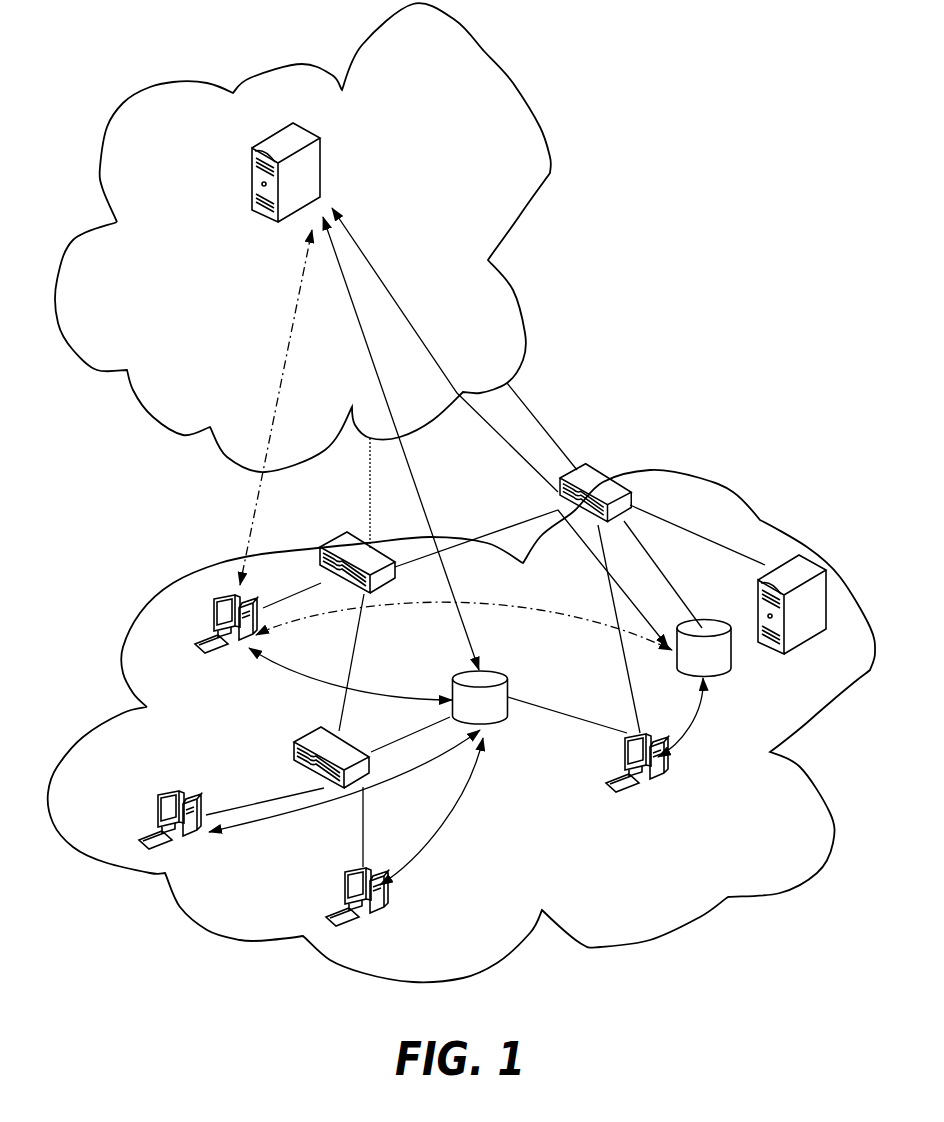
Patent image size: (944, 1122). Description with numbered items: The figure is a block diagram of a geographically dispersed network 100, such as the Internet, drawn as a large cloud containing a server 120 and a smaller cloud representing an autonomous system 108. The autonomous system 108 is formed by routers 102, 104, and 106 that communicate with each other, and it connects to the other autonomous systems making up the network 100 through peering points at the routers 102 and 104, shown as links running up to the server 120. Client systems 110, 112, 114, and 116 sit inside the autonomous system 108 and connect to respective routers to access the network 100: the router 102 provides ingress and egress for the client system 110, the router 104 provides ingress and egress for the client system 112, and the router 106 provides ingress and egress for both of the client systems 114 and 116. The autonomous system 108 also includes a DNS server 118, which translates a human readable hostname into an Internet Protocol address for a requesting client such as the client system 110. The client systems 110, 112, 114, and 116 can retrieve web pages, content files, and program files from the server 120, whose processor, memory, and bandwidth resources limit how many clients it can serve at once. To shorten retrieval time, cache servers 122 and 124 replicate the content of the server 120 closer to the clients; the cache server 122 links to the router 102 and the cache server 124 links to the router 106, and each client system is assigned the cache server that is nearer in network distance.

The network 100 is at (620, 196).
The router 102 is at (600, 476).
The router 104 is at (333, 532).
The router 106 is at (290, 748).
The autonomous system 108 is at (737, 492).
The client system 110 is at (630, 739).
The client system 112 is at (206, 650).
The client system 114 is at (159, 797).
The client system 116 is at (342, 875).
The DNS server 118 is at (786, 647).
The server 120 is at (270, 150).
The cache server 122 is at (732, 668).
The cache server 124 is at (508, 694).